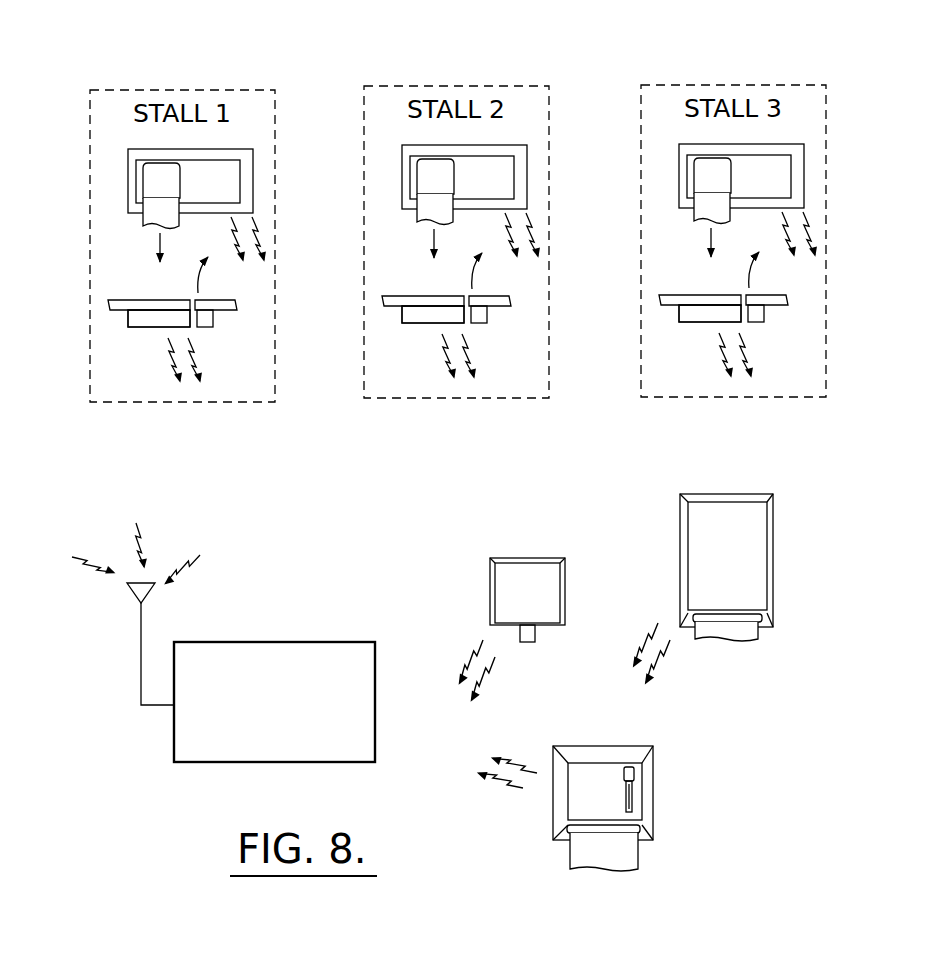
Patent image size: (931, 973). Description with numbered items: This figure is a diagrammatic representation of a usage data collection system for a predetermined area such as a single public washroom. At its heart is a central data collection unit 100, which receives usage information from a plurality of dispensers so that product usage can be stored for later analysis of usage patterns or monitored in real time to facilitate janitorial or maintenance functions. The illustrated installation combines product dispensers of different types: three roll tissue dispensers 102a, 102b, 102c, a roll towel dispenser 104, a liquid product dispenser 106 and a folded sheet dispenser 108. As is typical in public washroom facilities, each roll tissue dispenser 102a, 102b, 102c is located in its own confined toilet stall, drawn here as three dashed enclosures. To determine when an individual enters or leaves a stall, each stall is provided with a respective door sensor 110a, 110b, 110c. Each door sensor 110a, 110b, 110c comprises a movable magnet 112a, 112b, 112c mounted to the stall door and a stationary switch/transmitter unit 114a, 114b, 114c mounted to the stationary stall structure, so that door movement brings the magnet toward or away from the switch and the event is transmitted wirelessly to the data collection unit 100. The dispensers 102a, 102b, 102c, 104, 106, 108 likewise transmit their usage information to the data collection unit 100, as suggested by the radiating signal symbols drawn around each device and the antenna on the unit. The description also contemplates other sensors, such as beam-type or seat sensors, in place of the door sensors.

The central data collection unit 100 is at (277, 640).
The roll tissue dispenser 102a is at (253, 177).
The roll tissue dispenser 102b is at (515, 176).
The roll tissue dispenser 102c is at (791, 175).
The roll towel dispenser 104 is at (647, 793).
The liquid product dispenser 106 is at (562, 592).
The folded sheet dispenser 108 is at (768, 562).
The door sensor 110a is at (140, 343).
The door sensor 110b is at (394, 366).
The door sensor 110c is at (671, 365).
The movable magnet 112a is at (274, 339).
The movable magnet 112b is at (548, 335).
The movable magnet 112c is at (824, 334).
The stationary switch/transmitter unit 114a is at (106, 304).
The stationary switch/transmitter unit 114b is at (380, 300).
The stationary switch/transmitter unit 114c is at (657, 299).